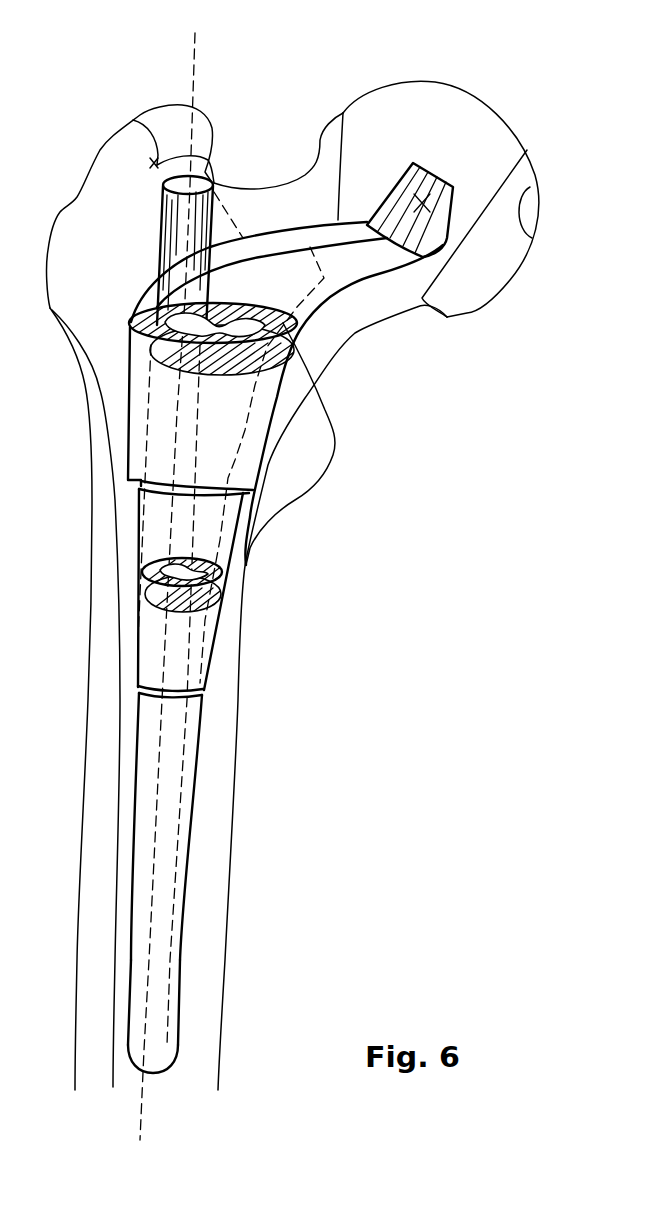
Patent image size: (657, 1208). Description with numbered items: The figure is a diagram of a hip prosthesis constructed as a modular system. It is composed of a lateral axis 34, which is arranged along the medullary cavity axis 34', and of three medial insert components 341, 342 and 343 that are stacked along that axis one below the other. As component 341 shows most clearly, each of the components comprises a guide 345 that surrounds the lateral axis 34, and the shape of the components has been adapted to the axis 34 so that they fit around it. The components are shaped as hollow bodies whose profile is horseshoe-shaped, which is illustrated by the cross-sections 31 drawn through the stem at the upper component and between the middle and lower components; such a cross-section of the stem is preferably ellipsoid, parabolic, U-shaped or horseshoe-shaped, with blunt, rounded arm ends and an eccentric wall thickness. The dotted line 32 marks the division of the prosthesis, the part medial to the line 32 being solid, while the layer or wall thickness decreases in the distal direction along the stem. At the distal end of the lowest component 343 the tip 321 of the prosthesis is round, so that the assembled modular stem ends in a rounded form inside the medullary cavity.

The lateral axis 34 is at (177, 594).
The medullary cavity axis 34' is at (208, 577).
The guide 345 is at (300, 332).
The cross-section 31 is at (317, 390).
The medial insert component 341 is at (227, 423).
The medial insert component 342 is at (203, 538).
The medial insert component 343 is at (170, 765).
The line 32 is at (173, 869).
The tip 321 is at (143, 1068).